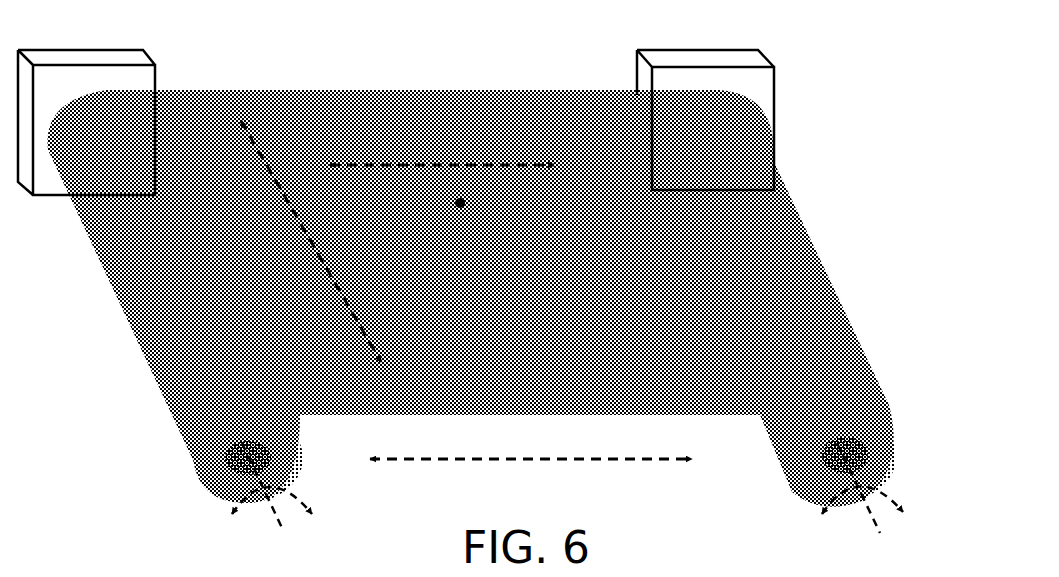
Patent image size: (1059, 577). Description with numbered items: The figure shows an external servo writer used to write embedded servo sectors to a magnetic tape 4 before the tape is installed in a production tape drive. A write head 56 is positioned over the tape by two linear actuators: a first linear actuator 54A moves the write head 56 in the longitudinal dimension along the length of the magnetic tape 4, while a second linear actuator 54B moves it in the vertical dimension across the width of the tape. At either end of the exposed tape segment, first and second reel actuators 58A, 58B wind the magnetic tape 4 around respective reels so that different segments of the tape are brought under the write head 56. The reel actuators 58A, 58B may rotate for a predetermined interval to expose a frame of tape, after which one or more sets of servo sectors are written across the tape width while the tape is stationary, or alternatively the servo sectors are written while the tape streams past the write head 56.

The magnetic tape 4 is at (137, 320).
The first linear actuator 54A is at (585, 202).
The second linear actuator 54B is at (288, 285).
The write head 56 is at (460, 203).
The first reel actuator 58A is at (77, 58).
The second reel actuator 58B is at (703, 58).